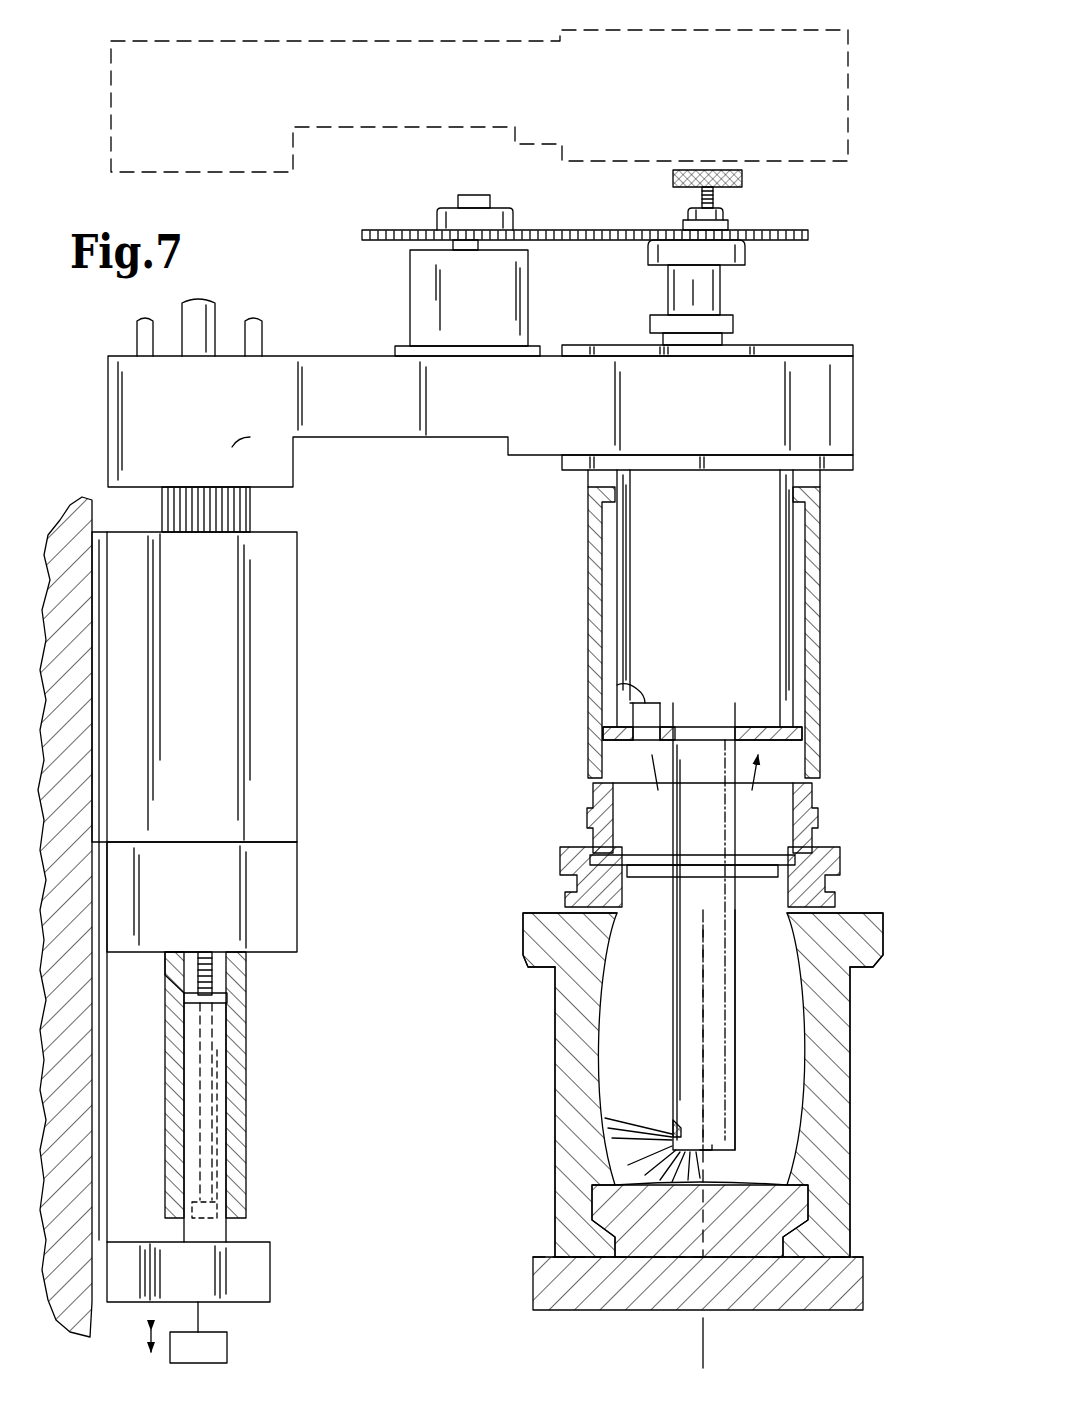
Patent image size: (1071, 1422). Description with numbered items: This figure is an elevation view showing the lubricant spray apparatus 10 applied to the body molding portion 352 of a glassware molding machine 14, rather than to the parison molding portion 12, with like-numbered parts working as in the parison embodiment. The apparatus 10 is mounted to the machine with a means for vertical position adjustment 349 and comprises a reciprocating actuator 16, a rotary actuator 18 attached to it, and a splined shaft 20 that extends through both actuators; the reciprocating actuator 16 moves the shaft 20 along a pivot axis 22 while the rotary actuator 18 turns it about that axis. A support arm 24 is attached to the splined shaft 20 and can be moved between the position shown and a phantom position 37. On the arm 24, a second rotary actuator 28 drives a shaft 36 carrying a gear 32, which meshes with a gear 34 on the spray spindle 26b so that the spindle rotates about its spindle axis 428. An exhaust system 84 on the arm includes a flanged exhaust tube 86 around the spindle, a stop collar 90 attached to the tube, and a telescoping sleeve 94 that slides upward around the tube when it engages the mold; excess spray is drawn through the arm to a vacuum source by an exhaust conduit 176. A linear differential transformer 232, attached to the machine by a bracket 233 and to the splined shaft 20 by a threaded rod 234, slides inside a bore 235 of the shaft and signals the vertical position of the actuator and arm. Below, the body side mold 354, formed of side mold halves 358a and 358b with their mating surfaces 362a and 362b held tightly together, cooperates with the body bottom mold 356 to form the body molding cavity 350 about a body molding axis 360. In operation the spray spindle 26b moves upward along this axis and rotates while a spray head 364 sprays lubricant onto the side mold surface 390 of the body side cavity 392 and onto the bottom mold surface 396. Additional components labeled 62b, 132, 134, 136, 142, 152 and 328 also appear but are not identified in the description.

The spray apparatus 10 is at (545, 515).
The parison molding portion 12 is at (98, 1027).
The glassware molding machine 14 is at (108, 1066).
The reciprocating actuator 16 is at (182, 690).
The rotary actuator 18 is at (177, 908).
The splined shaft 20 is at (250, 510).
The pivot axis 22 is at (208, 1187).
The support arm 24 is at (380, 410).
The spray spindle 26b is at (758, 294).
The rotary actuator 28 is at (460, 320).
The gear 32 is at (557, 230).
The gear 34 is at (625, 230).
The shaft 36 is at (489, 196).
The phantom position 37 is at (246, 41).
The dispensing rod 62b is at (739, 740).
The exhaust system 84 is at (572, 597).
The flanged exhaust tube 86 is at (690, 610).
The stop collar 90 is at (660, 737).
The telescoping sleeve 94 is at (588, 676).
The knob 132 is at (744, 177).
The threaded stem 134 is at (714, 195).
The nut 136 is at (725, 214).
The pin 142 is at (137, 326).
The pin 152 is at (262, 326).
The exhaust conduit 176 is at (215, 306).
The linear differential transformer 232 is at (237, 1076).
The bracket 233 is at (270, 1278).
The threaded rod 234 is at (247, 985).
The bore 235 is at (240, 1130).
The fitting 328 is at (552, 842).
The means for vertical position adjustment 349 is at (189, 1332).
The body molding cavity 350 is at (624, 1048).
The body molding portion 352 is at (468, 882).
The body side mold 354 is at (546, 1045).
The body bottom mold 356 is at (526, 1290).
The side mold half 358a is at (523, 930).
The side mold half 358b is at (887, 920).
The body molding axis 360 is at (705, 1352).
The mating surface 362a is at (703, 972).
The mating surface 362b is at (701, 1000).
The spray head 364 is at (652, 1140).
The side mold surface 390 is at (606, 1100).
The body side cavity 392 is at (638, 1160).
The bottom mold surface 396 is at (727, 1135).
The spindle axis 428 is at (692, 292).